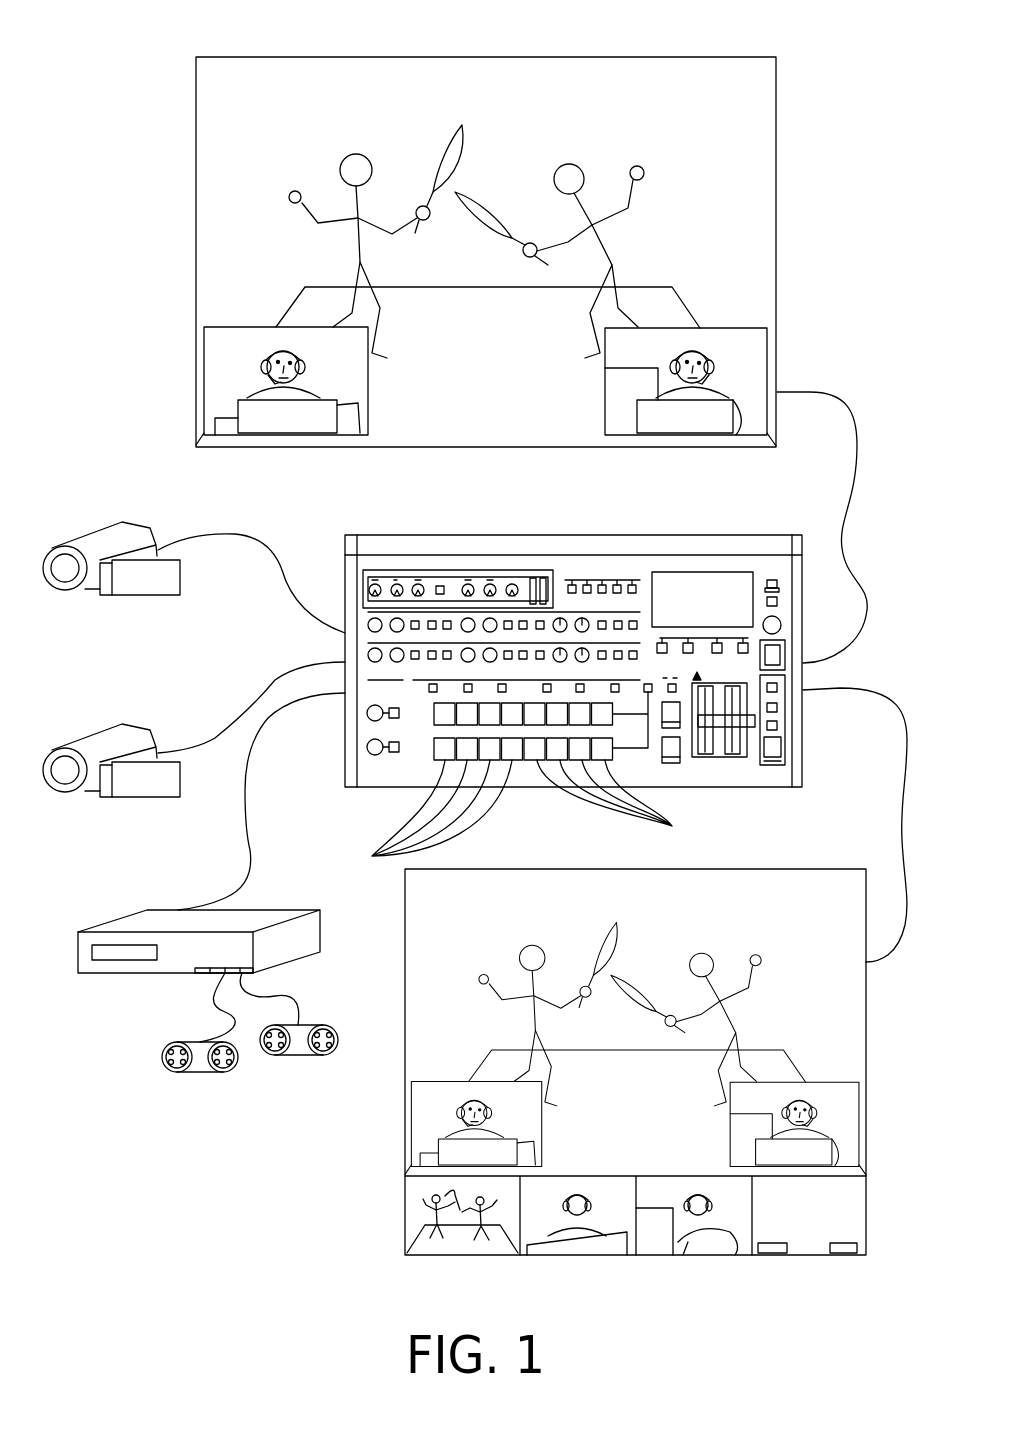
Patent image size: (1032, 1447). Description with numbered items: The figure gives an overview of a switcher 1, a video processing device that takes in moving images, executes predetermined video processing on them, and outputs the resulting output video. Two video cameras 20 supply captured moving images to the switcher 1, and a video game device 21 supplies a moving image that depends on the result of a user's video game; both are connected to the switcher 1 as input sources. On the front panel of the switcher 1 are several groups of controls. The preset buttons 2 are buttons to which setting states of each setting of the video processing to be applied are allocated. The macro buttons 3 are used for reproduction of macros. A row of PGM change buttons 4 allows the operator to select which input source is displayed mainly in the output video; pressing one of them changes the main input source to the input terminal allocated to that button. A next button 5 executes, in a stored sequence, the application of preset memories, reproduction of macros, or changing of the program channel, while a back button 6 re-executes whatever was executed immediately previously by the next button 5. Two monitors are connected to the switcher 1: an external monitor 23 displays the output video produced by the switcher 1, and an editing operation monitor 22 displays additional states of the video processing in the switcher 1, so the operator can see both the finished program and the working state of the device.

The switcher 1 is at (706, 528).
The preset buttons 2 is at (502, 684).
The macro buttons 3 is at (615, 684).
The PGM change buttons 4 is at (524, 818).
The next button 5 is at (780, 747).
The back button 6 is at (778, 725).
The video camera 20 is at (108, 538).
The video game device 21 is at (128, 923).
The editing operation monitor 22 is at (813, 859).
The external monitor 23 is at (660, 49).